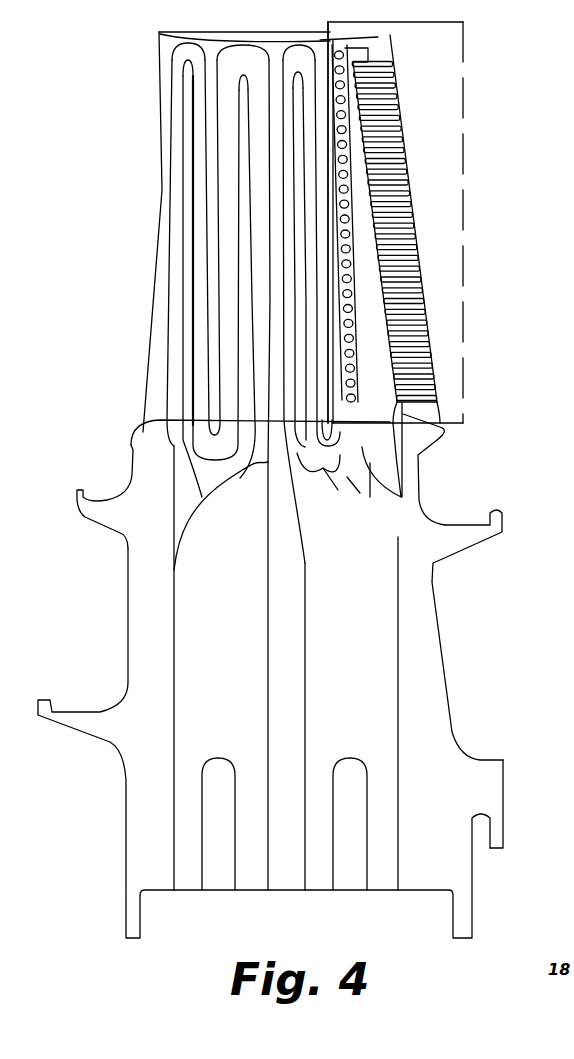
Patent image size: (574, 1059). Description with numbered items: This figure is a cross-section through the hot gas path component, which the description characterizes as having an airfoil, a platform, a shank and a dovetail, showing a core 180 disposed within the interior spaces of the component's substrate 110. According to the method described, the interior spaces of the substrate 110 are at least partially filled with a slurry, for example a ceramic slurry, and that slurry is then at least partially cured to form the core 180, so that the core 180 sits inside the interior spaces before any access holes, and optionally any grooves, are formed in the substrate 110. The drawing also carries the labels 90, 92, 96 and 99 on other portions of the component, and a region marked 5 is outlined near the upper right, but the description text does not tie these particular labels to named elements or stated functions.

The airfoil 90 is at (162, 263).
The platform 92 is at (148, 442).
The substrate 110 is at (128, 547).
The core 180 is at (223, 627).
The shank 96 is at (420, 628).
The dovetail / root 99 is at (447, 850).
The detail region shown in FIG. 5 is at (464, 82).